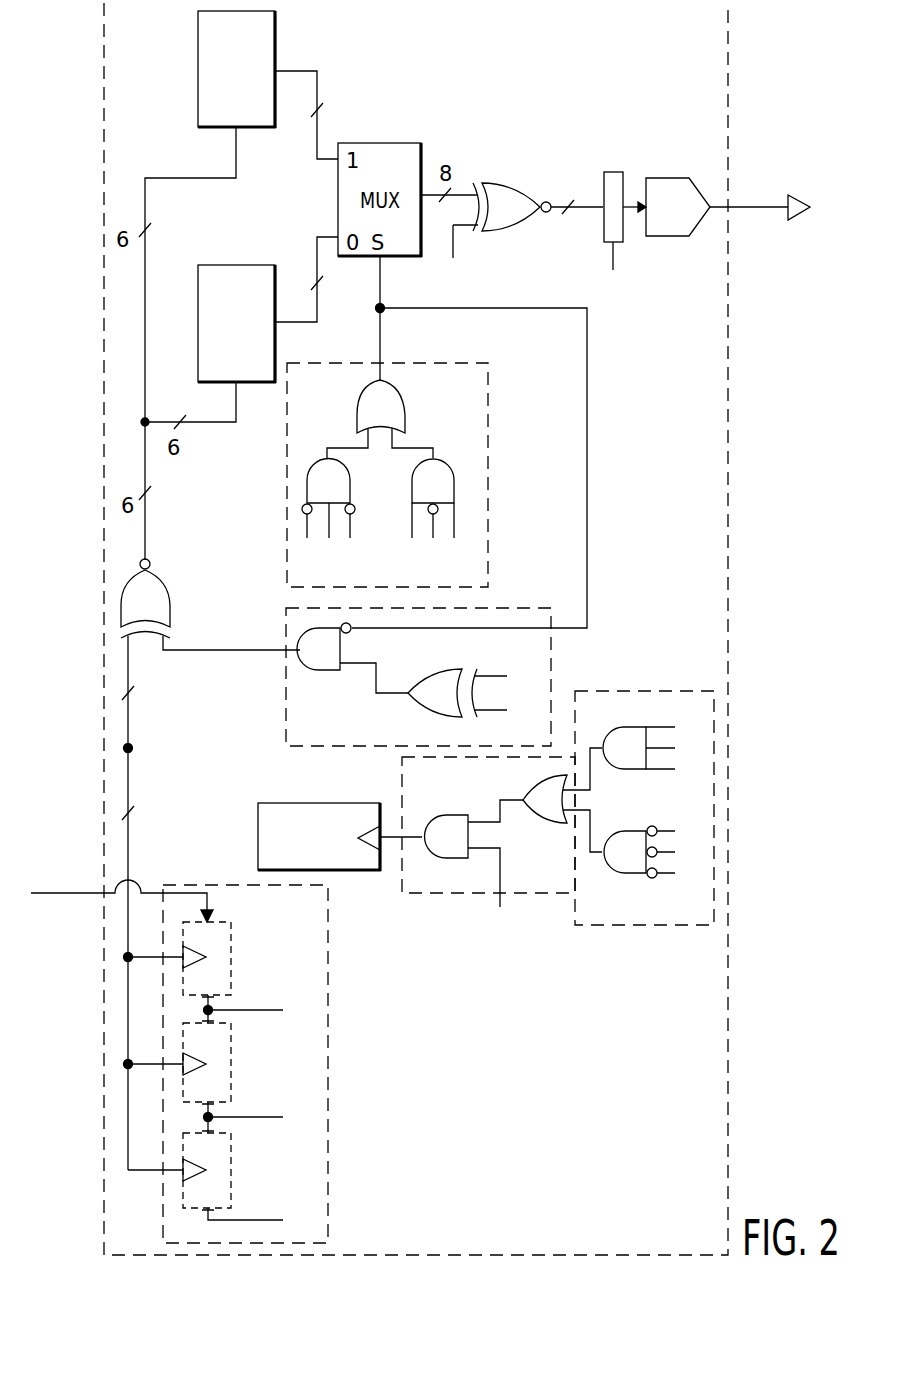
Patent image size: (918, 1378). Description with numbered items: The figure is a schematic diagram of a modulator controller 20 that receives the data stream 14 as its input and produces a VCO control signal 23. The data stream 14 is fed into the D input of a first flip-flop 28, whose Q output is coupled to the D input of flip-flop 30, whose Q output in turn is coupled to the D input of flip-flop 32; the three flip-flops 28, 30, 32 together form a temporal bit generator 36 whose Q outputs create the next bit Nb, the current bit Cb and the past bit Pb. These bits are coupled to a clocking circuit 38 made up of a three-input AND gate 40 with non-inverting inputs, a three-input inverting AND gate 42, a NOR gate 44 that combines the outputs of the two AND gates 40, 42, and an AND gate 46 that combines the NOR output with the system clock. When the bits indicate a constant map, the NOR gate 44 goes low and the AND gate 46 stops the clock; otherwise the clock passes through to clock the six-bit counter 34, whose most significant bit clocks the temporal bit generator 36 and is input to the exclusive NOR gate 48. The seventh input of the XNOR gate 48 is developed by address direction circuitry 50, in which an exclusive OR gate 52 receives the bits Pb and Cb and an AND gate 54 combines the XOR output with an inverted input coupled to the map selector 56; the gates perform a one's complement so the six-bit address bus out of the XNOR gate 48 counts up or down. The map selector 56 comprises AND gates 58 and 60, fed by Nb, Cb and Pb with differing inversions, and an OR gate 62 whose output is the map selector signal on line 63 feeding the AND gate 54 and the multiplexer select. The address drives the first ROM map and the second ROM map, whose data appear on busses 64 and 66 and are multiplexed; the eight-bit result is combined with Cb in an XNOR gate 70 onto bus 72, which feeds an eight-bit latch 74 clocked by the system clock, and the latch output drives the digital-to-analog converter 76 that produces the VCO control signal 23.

The data stream 14 is at (78, 893).
The modulator controller 20 is at (710, 38).
The VCO control signal 23 is at (776, 206).
The flip-flop 28 is at (233, 949).
The flip-flop 30 is at (233, 1055).
The flip-flop 32 is at (233, 1163).
The 6-bit counter 34 is at (265, 803).
The temporal bit generator 36 is at (330, 928).
The clocking circuit 38 is at (657, 691).
The 3-input AND gate 40 is at (625, 770).
The 3-input inverting AND gate 42 is at (606, 866).
The NOR gate 44 is at (540, 824).
The AND gate 46 is at (440, 815).
The exclusive NOR gate 48 is at (167, 582).
The address direction circuitry 50 is at (528, 598).
The exclusive OR gate 52 is at (442, 670).
The AND gate 54 is at (325, 672).
The map selector 56 is at (490, 380).
The AND gate 58 is at (350, 488).
The AND gate 60 is at (450, 458).
The OR gate 62 is at (405, 404).
The line 63 is at (383, 343).
The bus 64 is at (317, 252).
The bus 66 is at (317, 78).
The XNOR gate 70 is at (495, 183).
The bus 72 is at (590, 202).
The 8-bit latch 74 is at (615, 172).
The digital-to-analog converter 76 is at (668, 178).